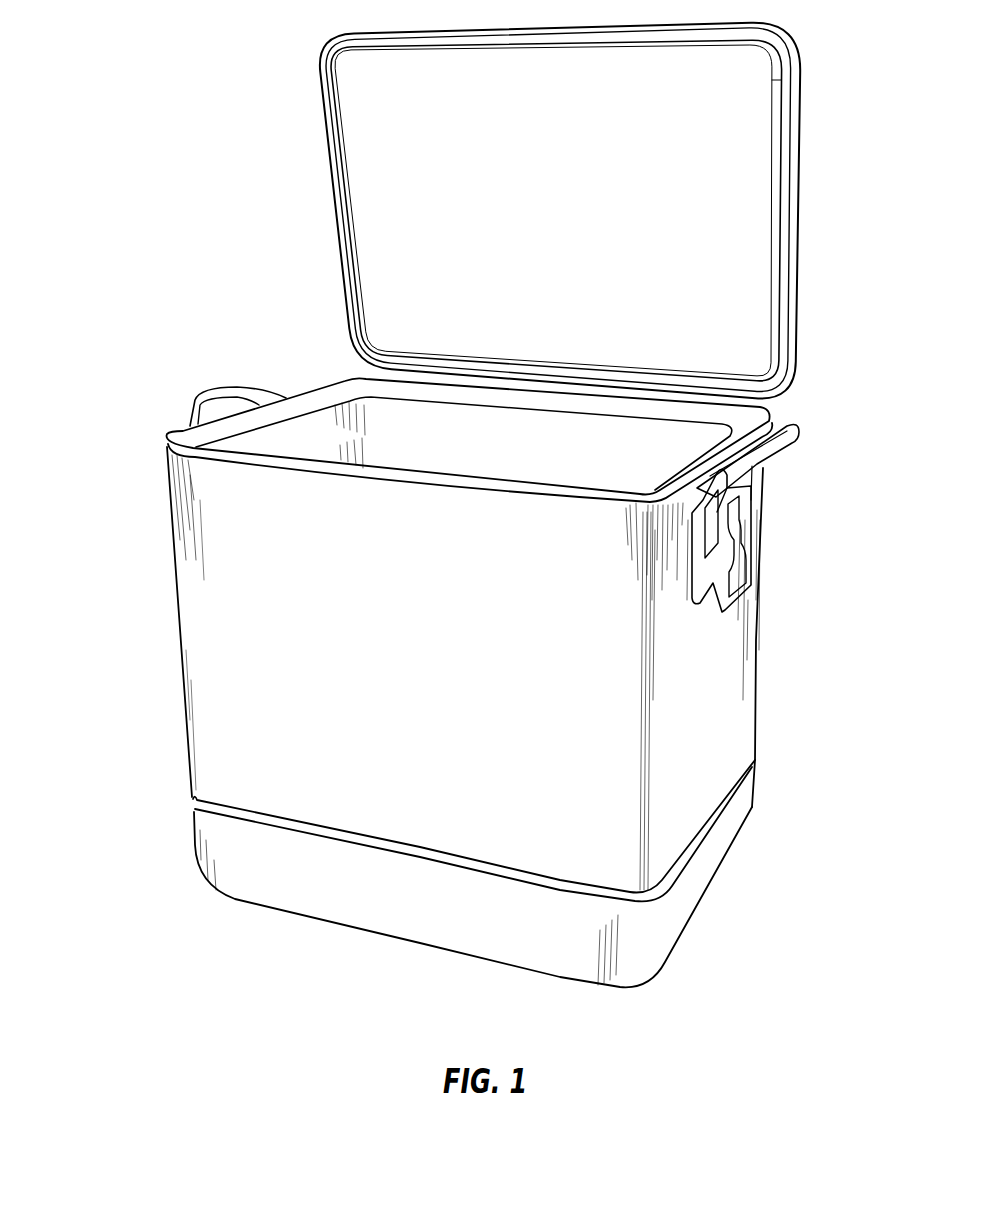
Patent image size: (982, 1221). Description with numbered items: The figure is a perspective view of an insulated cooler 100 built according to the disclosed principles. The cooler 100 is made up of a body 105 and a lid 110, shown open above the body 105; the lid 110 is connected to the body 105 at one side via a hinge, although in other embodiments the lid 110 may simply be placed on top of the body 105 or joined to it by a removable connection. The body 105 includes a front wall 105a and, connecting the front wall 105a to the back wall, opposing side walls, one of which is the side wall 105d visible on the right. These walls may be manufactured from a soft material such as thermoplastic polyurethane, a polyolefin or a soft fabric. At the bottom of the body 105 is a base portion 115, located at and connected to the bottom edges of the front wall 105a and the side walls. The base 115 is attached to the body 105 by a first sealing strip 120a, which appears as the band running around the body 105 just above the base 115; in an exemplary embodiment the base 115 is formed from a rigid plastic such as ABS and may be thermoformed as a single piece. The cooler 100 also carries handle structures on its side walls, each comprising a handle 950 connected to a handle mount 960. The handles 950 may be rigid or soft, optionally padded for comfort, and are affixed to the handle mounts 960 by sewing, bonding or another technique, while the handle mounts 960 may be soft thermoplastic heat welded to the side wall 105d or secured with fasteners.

The insulated cooler 100 is at (151, 46).
The lid 110 is at (551, 224).
The body 105 is at (760, 663).
The front wall 105a is at (438, 832).
The side wall 105d is at (733, 710).
The first sealing strip 120a is at (755, 757).
The base portion 115 is at (703, 863).
The handle 950 is at (212, 390).
The handle mount 960 is at (752, 532).